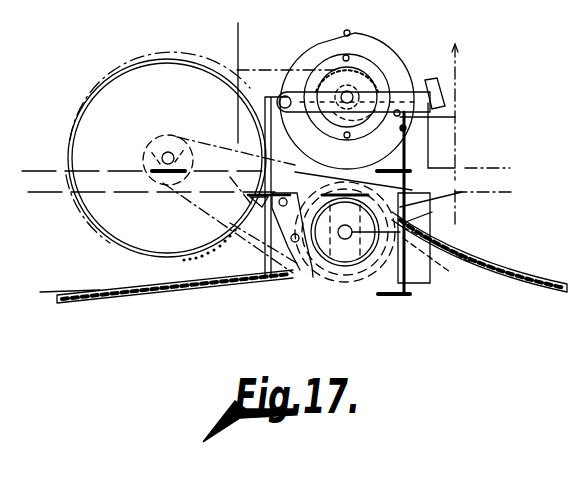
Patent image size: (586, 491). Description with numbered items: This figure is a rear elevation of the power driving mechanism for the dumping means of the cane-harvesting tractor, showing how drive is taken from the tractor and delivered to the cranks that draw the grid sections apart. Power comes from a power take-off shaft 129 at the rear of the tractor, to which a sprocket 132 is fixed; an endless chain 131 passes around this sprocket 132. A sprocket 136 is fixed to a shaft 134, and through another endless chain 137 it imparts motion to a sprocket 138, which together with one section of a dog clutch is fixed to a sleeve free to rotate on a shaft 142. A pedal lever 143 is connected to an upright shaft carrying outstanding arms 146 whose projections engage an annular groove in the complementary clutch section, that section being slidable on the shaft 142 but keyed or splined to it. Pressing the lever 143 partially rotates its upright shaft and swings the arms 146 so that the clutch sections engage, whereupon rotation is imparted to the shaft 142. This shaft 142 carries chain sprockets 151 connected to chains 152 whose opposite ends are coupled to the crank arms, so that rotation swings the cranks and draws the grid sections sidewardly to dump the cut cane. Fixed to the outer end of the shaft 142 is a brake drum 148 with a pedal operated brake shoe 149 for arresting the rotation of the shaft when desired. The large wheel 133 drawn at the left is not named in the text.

The power take-off shaft 129 is at (355, 88).
The endless chain 131 is at (238, 68).
The sprocket 132 is at (322, 50).
The drive wheel 133 is at (105, 88).
The shaft 134 is at (167, 152).
The sprocket 136 is at (173, 194).
The endless chain 137 is at (213, 143).
The sprocket 138 is at (434, 261).
The shaft 142 is at (428, 210).
The pedal lever 143 is at (455, 117).
The outstanding arms 146 is at (430, 172).
The brake drum 148 is at (355, 272).
The pedal operated brake shoe 149 is at (300, 280).
The chain sprockets 151 is at (440, 238).
The chains 152 is at (75, 292).